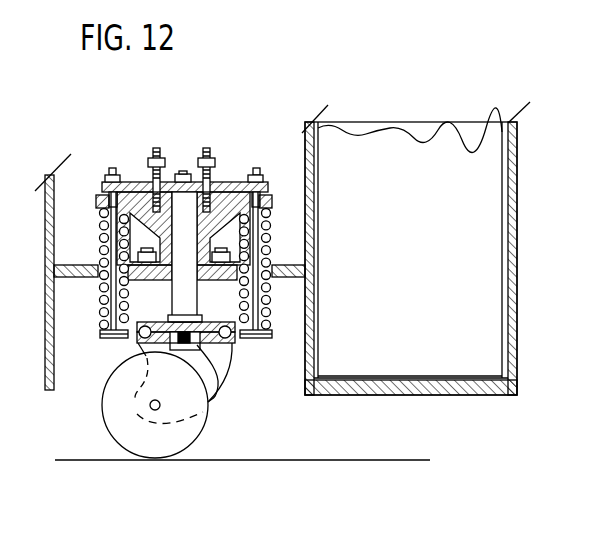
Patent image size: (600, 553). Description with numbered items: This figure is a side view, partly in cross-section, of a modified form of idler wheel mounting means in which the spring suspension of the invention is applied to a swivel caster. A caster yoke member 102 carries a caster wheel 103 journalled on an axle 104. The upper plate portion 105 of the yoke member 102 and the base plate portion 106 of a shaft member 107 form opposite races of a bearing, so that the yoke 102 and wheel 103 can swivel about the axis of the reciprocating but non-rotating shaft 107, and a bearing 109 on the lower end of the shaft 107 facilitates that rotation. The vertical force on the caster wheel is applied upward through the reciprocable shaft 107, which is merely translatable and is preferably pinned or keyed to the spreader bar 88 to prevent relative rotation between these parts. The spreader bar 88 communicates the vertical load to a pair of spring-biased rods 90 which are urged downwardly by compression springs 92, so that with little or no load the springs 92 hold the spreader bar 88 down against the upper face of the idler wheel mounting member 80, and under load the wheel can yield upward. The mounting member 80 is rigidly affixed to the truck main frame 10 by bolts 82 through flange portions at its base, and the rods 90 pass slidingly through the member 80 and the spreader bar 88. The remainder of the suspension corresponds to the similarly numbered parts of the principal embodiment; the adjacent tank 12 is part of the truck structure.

The truck main frame 10 is at (45, 266).
The tank 12 is at (418, 281).
The idler wheel mounting member 80 is at (144, 236).
The bolts 82 is at (147, 291).
The spreader bar 88 is at (152, 182).
The spring-biased rods 90 is at (113, 170).
The compression springs 92 is at (98, 236).
The caster yoke member 102 is at (230, 362).
The caster wheel 103 is at (200, 428).
The axle 104 is at (150, 408).
The upper plate portion 105 is at (136, 342).
The base plate portion 106 is at (162, 321).
The shaft member 107 is at (197, 296).
The bearing 109 is at (220, 385).